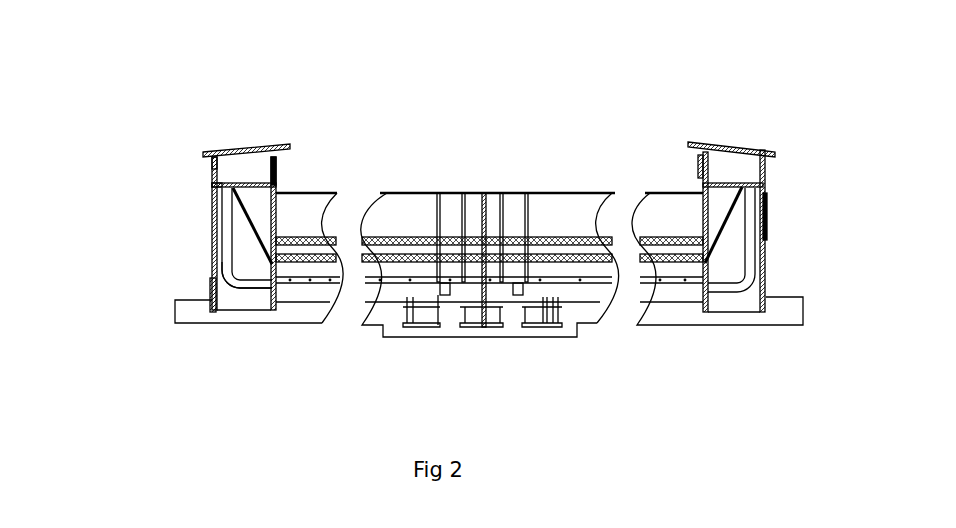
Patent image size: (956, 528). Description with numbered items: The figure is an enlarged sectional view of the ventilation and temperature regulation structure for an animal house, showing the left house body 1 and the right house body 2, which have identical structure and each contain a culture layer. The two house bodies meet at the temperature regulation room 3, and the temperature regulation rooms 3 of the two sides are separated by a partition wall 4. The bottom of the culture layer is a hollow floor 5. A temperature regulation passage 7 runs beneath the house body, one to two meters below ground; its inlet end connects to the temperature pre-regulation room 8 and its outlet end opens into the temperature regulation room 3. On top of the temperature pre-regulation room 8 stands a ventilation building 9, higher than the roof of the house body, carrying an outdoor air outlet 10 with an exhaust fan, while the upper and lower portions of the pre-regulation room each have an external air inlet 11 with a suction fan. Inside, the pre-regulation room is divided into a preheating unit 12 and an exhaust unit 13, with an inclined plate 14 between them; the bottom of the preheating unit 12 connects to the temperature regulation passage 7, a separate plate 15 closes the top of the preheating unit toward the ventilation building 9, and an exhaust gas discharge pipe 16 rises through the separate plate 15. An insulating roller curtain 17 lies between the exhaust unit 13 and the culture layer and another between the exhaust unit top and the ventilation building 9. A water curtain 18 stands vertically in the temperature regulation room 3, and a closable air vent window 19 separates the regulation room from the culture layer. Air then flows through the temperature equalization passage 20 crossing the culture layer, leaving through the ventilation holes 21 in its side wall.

The left house body 1 is at (445, 212).
The right house body 2 is at (681, 211).
The temperature regulation room 3 is at (545, 203).
The partition wall 4 is at (536, 223).
The hollow floor 5 is at (489, 356).
The temperature regulation passage 7 is at (285, 316).
The temperature pre-regulation room 8 is at (168, 246).
The ventilation building 9 is at (219, 126).
The outdoor air outlet 10 is at (220, 98).
The external air inlet 11 is at (137, 233).
The preheating unit 12 is at (218, 359).
The exhaust unit 13 is at (161, 145).
The inclined plate 14 is at (144, 331).
The separate plate 15 is at (142, 211).
The exhaust gas discharge pipe 16 is at (164, 304).
The insulating roller curtain 17 is at (270, 171).
The water curtain 18 is at (524, 298).
The air vent window 19 is at (482, 319).
The temperature equalization passage 20 is at (489, 191).
The ventilation hole 21 is at (489, 155).